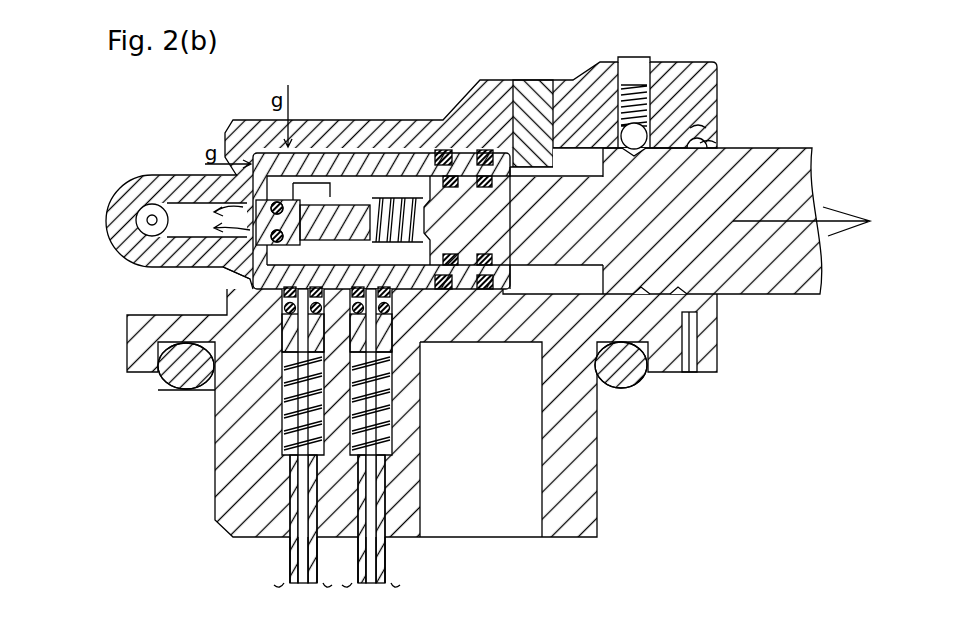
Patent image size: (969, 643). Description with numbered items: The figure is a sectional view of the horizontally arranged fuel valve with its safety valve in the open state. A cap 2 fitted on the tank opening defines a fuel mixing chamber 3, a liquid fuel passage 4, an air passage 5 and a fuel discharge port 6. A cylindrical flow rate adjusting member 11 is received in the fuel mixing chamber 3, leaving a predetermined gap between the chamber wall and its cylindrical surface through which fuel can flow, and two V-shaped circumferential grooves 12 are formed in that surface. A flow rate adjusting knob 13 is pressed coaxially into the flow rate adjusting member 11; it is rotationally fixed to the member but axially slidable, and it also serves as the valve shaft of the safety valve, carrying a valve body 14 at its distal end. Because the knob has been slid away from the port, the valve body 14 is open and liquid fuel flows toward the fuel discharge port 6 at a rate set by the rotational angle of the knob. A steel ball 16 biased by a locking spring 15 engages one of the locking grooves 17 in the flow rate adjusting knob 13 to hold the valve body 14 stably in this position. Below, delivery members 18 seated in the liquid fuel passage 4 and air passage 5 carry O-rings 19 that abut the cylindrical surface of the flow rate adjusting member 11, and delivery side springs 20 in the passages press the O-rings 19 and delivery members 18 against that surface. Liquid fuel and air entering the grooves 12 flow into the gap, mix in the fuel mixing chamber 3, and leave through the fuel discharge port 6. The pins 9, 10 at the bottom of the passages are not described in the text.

The cap 2 is at (473, 115).
The fuel mixing chamber 3 is at (343, 157).
The liquid fuel passage 4 is at (280, 538).
The air passage 5 is at (378, 534).
The fuel discharge port 6 is at (168, 205).
The first pin 9 is at (298, 563).
The second pin 10 is at (383, 562).
The flow rate adjusting member 11 is at (240, 271).
The V-shaped circumferential grooves 12 is at (390, 293).
The flow rate adjusting knob 13 is at (717, 267).
The valve body 14 is at (292, 190).
The locking spring 15 is at (634, 103).
The steel ball 16 is at (650, 135).
The locking grooves 17 is at (706, 144).
The delivery members 18 is at (215, 390).
The O-rings 19 is at (195, 383).
The delivery side springs 20 is at (375, 440).